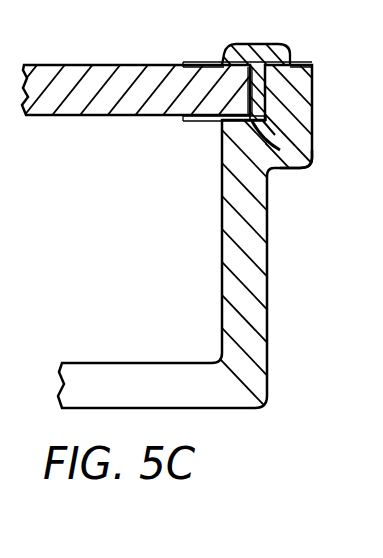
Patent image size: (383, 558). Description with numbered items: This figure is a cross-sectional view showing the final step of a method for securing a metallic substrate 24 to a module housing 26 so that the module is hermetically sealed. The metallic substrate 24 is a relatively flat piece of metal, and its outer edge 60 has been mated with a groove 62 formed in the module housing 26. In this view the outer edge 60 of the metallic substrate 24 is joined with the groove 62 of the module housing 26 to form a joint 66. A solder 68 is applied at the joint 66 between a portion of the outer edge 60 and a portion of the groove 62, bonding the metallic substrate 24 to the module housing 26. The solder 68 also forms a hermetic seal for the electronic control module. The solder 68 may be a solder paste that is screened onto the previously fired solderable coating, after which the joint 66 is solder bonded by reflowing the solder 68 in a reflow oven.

The metallic substrate 24 is at (90, 80).
The module housing 26 is at (268, 312).
The outer edge 60 is at (240, 88).
The groove 62 is at (232, 144).
The joint 66 is at (302, 169).
The solder 68 is at (267, 53).